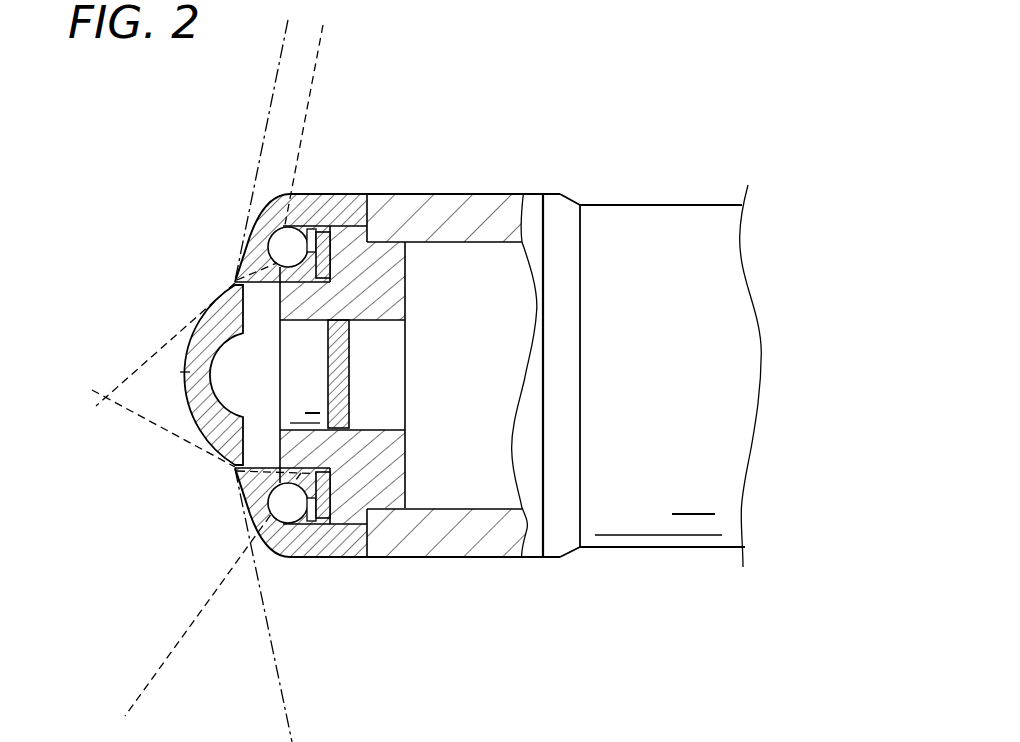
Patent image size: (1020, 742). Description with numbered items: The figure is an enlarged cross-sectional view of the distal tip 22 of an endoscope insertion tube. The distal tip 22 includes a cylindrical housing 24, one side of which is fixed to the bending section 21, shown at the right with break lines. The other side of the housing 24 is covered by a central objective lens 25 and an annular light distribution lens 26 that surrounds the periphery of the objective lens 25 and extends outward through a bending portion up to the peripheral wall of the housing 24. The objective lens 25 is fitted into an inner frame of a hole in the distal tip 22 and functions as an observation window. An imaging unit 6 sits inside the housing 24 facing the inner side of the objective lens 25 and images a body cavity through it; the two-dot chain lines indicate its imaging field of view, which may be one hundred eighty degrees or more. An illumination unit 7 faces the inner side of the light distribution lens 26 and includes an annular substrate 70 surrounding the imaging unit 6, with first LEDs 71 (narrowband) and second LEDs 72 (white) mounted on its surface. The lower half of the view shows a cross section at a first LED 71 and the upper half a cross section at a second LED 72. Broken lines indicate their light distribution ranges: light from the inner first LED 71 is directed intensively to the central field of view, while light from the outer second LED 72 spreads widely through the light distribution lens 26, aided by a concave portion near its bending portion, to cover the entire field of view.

The imaging unit 6 is at (354, 364).
The illumination unit 7 is at (323, 214).
The bending section 21 is at (642, 218).
The distal tip 22 is at (451, 183).
The housing 24 is at (450, 547).
The objective lens 25 is at (188, 373).
The light distribution lens 26 is at (250, 243).
The substrate 70 is at (320, 518).
The first LED 71 is at (305, 487).
The second LED 72 is at (311, 229).